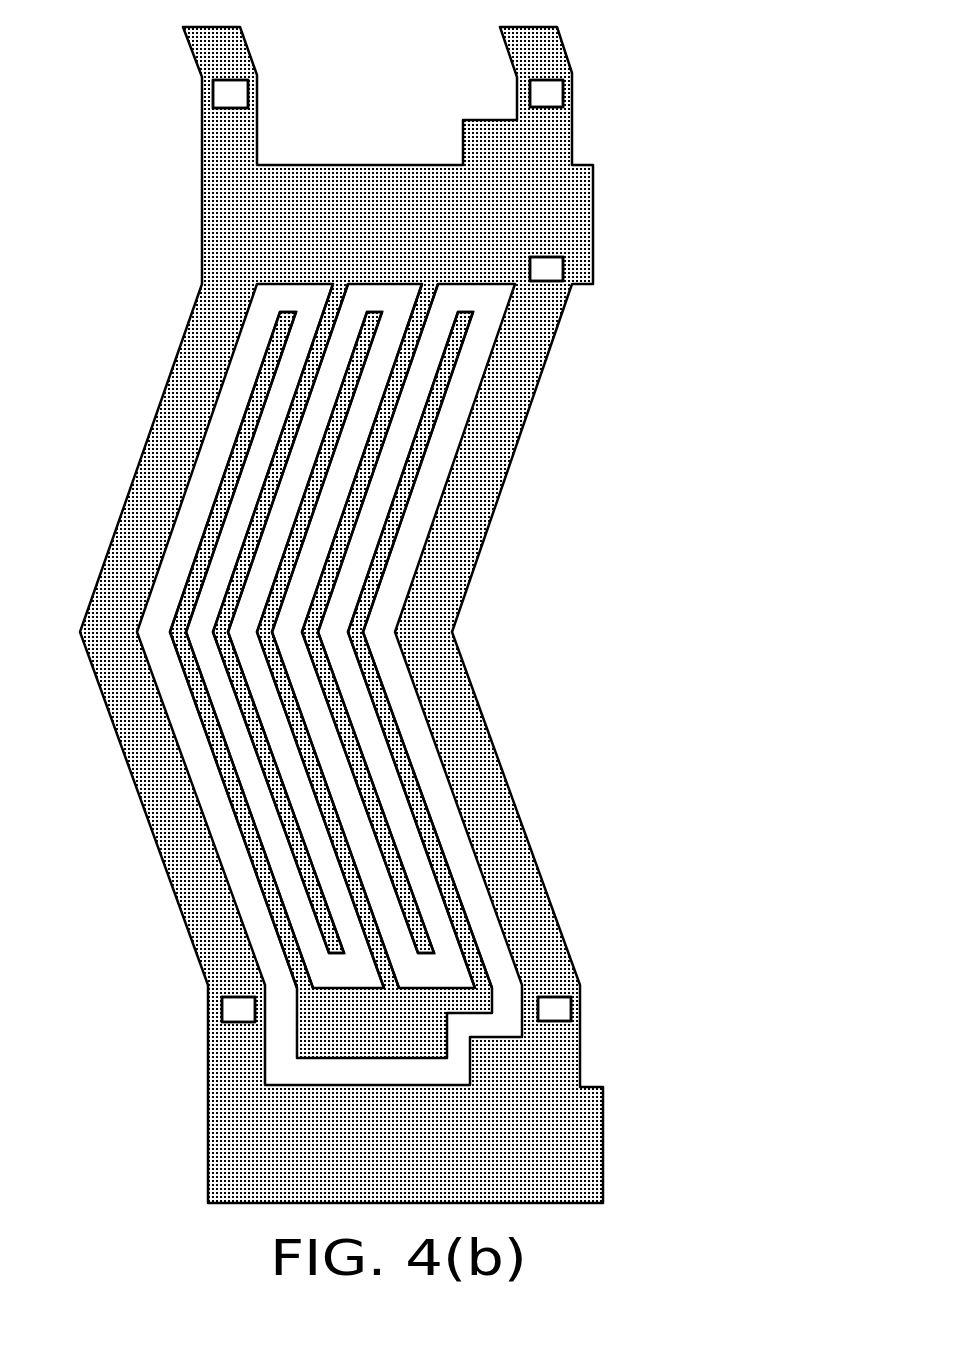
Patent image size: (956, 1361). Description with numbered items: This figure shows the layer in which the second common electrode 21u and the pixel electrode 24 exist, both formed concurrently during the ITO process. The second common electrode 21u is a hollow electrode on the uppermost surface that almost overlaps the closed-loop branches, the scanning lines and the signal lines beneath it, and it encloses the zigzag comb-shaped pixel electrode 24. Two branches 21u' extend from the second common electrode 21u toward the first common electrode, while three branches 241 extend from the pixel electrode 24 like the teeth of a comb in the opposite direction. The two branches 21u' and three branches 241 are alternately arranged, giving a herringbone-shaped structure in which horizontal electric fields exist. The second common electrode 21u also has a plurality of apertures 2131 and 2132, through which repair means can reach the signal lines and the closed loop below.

The second common electrode 21u is at (406, 615).
The branches 21u' is at (386, 615).
The apertures 2131 is at (228, 88).
The aperture 2132 is at (553, 273).
The pixel electrode 24 is at (467, 995).
The branches 241 is at (260, 393).